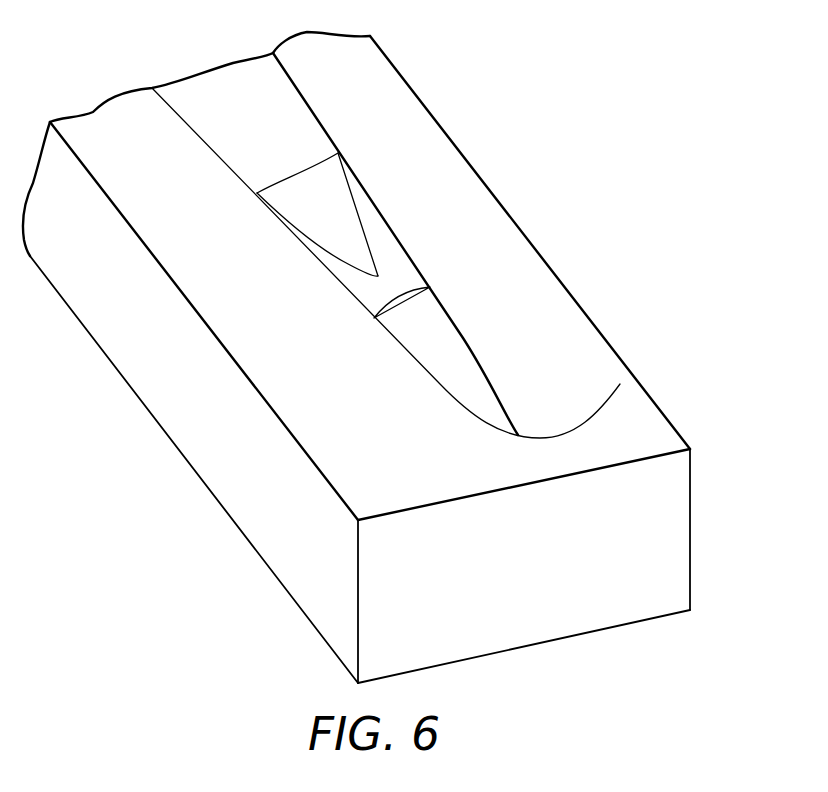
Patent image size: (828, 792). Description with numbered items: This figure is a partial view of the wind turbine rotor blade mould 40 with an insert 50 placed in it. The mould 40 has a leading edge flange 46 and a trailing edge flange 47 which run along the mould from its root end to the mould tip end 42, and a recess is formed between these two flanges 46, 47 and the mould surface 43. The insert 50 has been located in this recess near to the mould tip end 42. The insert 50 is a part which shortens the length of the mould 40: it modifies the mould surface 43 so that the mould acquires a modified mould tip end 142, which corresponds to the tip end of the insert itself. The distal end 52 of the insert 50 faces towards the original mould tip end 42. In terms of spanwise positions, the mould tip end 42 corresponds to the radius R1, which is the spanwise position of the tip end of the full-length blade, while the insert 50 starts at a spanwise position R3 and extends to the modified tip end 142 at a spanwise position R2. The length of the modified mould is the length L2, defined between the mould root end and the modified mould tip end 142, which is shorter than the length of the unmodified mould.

The mould 40 is at (225, 603).
The mould tip end 42 is at (620, 384).
The mould surface 43 is at (235, 124).
The leading edge flange 46 is at (403, 127).
The trailing edge flange 47 is at (255, 320).
The insert 50 is at (402, 283).
The distal end 52 is at (425, 293).
The modified mould tip end 142 is at (400, 285).
The radius R1 is at (518, 435).
The spanwise position R2 is at (371, 302).
The spanwise position R3 is at (306, 172).
The length L2 is at (478, 5).